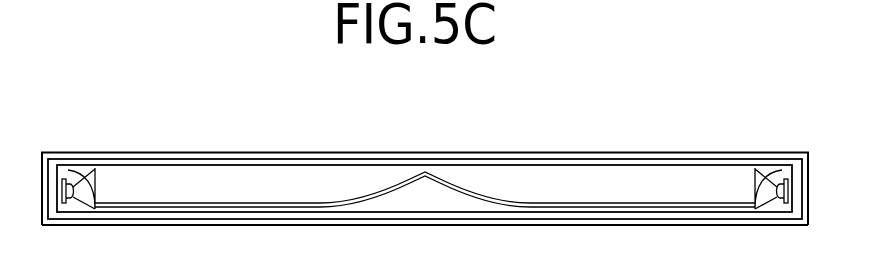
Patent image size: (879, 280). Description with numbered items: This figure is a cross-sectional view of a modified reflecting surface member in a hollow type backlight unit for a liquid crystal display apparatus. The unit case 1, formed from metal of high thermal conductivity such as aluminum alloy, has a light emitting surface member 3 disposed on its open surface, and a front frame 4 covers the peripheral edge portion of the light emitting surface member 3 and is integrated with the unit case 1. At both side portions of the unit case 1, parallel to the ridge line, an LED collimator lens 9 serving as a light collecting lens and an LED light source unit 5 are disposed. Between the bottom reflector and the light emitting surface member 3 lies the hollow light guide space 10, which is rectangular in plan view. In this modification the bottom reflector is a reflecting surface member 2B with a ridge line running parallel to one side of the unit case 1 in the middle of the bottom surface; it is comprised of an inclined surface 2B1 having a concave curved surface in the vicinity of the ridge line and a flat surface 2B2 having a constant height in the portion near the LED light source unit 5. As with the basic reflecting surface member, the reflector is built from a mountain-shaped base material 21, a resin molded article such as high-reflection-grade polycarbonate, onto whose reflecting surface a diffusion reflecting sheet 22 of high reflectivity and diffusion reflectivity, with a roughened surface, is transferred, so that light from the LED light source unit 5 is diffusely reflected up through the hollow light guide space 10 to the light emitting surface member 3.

The unit case 1 is at (165, 225).
The light emitting surface member 3 is at (660, 157).
The front frame 4 is at (71, 152).
The LED light source unit 5 is at (64, 190).
The LED collimator lens 9 is at (97, 158).
The hollow light guide space 10 is at (218, 158).
The reflecting surface member 2B is at (425, 147).
The inclined surface 2B1 is at (398, 183).
The flat surface 2B2 is at (168, 158).
The mountain-shaped base material 21 is at (512, 213).
The diffusion reflecting sheet 22 is at (354, 195).